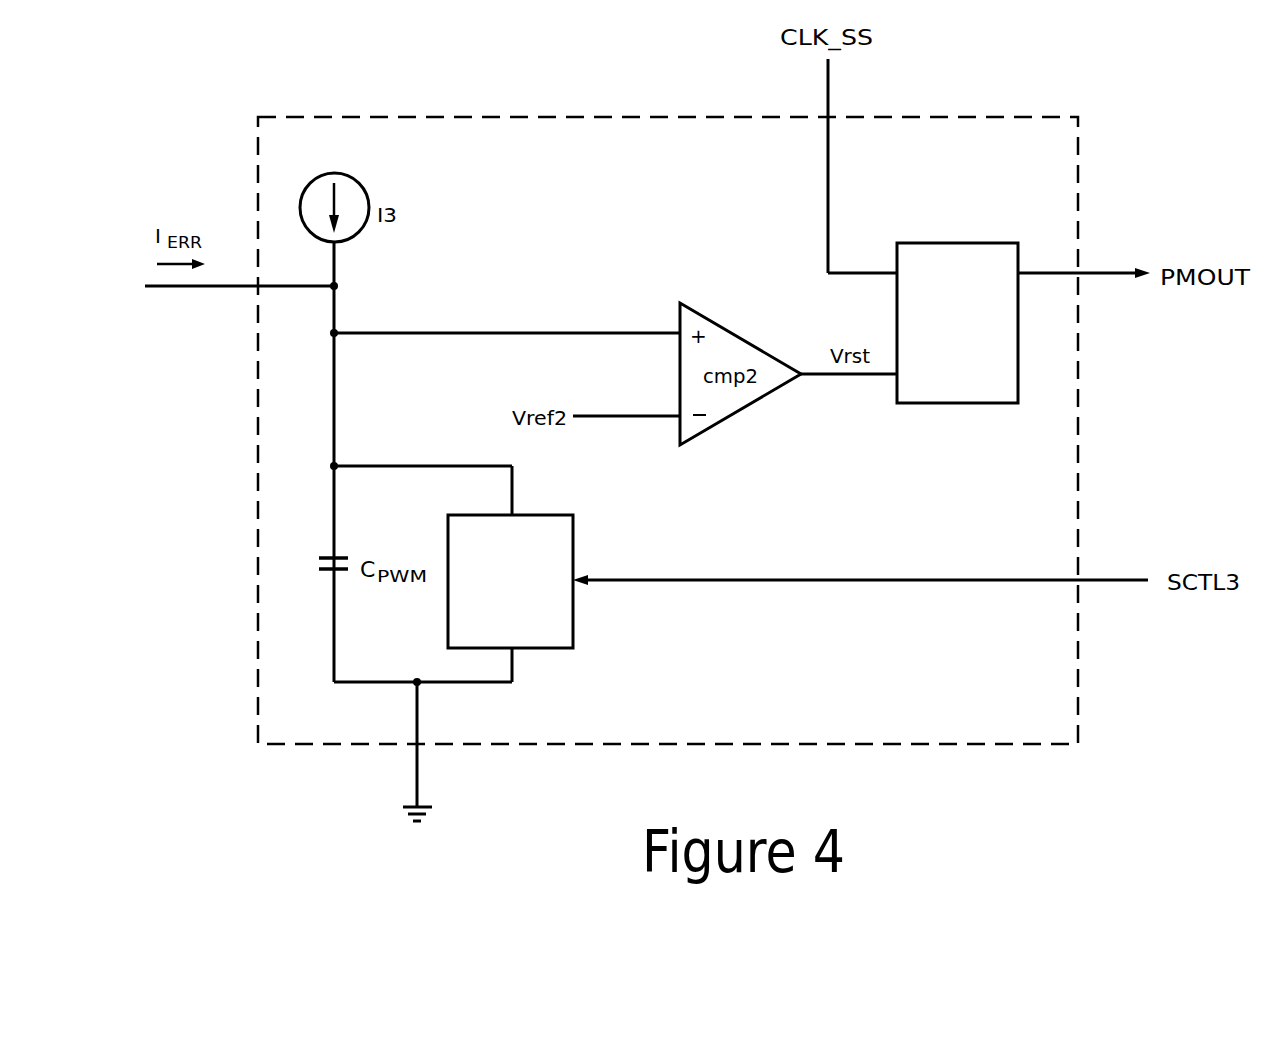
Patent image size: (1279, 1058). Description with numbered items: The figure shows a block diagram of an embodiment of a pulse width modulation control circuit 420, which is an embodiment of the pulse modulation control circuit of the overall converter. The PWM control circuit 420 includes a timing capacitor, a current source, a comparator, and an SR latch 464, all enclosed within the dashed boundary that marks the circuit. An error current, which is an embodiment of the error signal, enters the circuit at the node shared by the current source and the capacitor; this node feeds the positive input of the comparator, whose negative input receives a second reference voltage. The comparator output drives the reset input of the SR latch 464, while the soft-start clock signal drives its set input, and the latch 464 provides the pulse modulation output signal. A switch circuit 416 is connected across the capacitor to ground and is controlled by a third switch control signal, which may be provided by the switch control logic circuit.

The pulse width modulation control circuit 420 is at (682, 160).
The SR latch 464 is at (970, 337).
The switch circuit 416 is at (525, 633).